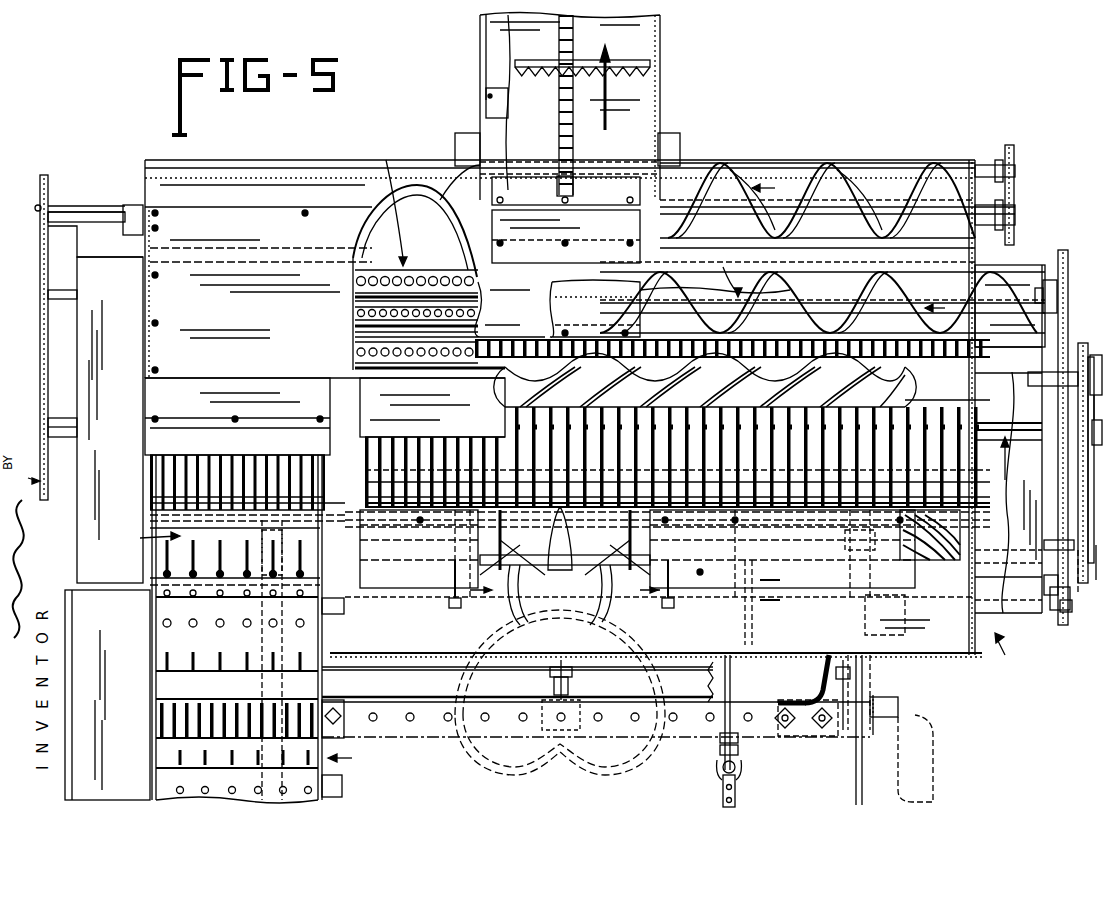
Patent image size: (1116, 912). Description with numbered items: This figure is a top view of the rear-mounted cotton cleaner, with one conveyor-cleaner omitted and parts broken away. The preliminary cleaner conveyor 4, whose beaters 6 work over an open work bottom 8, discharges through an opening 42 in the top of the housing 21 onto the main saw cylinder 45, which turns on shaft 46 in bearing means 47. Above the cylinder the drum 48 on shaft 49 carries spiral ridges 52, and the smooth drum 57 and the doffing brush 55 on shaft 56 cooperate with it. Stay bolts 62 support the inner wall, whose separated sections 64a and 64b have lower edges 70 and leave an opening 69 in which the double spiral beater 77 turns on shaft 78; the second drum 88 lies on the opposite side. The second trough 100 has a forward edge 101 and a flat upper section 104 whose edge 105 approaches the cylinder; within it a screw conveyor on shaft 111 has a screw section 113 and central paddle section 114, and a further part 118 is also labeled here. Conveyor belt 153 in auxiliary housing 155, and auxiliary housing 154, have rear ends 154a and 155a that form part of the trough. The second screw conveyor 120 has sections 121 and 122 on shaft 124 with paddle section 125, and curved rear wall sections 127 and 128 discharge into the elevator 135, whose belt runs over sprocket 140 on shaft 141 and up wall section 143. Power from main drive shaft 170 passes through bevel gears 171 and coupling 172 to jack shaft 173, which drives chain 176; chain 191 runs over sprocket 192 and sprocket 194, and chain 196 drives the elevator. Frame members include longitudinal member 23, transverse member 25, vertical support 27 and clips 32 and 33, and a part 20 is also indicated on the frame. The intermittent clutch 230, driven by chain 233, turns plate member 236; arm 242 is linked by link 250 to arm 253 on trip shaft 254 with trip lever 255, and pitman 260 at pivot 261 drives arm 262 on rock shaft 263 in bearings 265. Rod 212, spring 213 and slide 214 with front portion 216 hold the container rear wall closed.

The elevator 135 is at (660, 60).
The imperforate bottom or wall section 143 is at (562, 112).
The sprocket 140 is at (560, 165).
The shaft 141 is at (610, 148).
The paddle section 125 is at (588, 187).
The central paddle section 114 is at (578, 313).
The screw conveyor section 121 is at (406, 185).
The curved rear wall section 127 is at (450, 195).
The doffing drum or brush 55 is at (430, 253).
The curved rear wall section 128 is at (766, 176).
The screw conveyor section 122 is at (850, 185).
The second screw conveyor 120 is at (858, 202).
The chain 196 is at (1015, 175).
The screw conveyor shaft 124 is at (88, 214).
The drive chain 176 is at (1061, 255).
The rear end of auxiliary housing 155a is at (1044, 262).
The doffing brush shaft 56 is at (1060, 278).
The plate member 236 is at (1085, 345).
The chain 233 is at (1080, 348).
The screw conveyor section 113 is at (762, 305).
The auger 118 is at (715, 271).
The forwardmost edge 101 is at (715, 332).
The drum 48 is at (823, 387).
The second trough or concave wall 100 is at (903, 314).
The horizontal section 104 is at (522, 313).
The edge portion 105 is at (480, 332).
The housing 21 is at (312, 344).
The smooth drum 57 is at (375, 393).
The main saw cylinder 45 is at (372, 455).
The spiral ridges 52 is at (685, 398).
The rod 212 is at (148, 298).
The spring 213 is at (143, 422).
The slide 214 is at (145, 492).
The auxiliary housing 154 is at (90, 514).
The rear end of auxiliary housing 154a is at (84, 262).
The opening 42 is at (216, 553).
The front portion of slide 216 is at (150, 555).
The bearings 265 is at (262, 541).
The sprocket 194 is at (42, 208).
The chain 191 is at (40, 268).
The shaft 111 is at (38, 315).
The shaft 46 is at (42, 430).
The bearing means 47 is at (63, 440).
The sprocket 192 is at (23, 471).
The lowermost edge 70 is at (375, 578).
The rock shaft 263 is at (345, 607).
The inner wall section 64a is at (440, 603).
The stay bolts 62 is at (454, 602).
The double spiral beater 77 is at (515, 598).
The opening 69 is at (565, 551).
The inner wall section 64b is at (680, 605).
The shaft 78 is at (698, 570).
The jack shaft 173 is at (769, 535).
The second drum 88 is at (914, 541).
The bevel gears 171 is at (758, 603).
The coupling 172 is at (806, 662).
The trip shaft 254 is at (897, 620).
The frame 20 is at (686, 472).
The intermittently operating clutch 230 is at (1036, 405).
The shaft 49 is at (1034, 390).
The arm 242 is at (1014, 437).
The auxiliary housing 155 is at (1028, 492).
The conveyor belt 153 is at (1082, 466).
The pitman 260 is at (1036, 492).
The link 250 is at (1062, 506).
The arm 262 is at (1093, 570).
The arm 253 is at (1088, 606).
The main drive shaft 170 is at (735, 712).
The longitudinal angle iron member 23 is at (870, 686).
The vertical angle iron support 27 is at (895, 712).
The trip lever 255 is at (805, 720).
The clip 33 is at (795, 736).
The transverse angle iron member 25 is at (618, 690).
The open work bottom 8 is at (561, 695).
The clip 32 is at (342, 720).
The preliminary cleaner conveyor 4 is at (257, 627).
The beaters 6 is at (172, 780).
The pivotal connection 261 is at (238, 690).